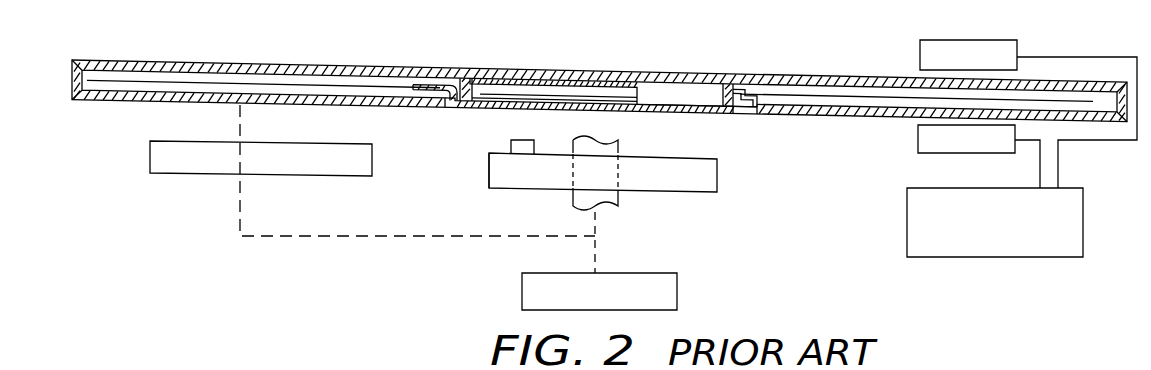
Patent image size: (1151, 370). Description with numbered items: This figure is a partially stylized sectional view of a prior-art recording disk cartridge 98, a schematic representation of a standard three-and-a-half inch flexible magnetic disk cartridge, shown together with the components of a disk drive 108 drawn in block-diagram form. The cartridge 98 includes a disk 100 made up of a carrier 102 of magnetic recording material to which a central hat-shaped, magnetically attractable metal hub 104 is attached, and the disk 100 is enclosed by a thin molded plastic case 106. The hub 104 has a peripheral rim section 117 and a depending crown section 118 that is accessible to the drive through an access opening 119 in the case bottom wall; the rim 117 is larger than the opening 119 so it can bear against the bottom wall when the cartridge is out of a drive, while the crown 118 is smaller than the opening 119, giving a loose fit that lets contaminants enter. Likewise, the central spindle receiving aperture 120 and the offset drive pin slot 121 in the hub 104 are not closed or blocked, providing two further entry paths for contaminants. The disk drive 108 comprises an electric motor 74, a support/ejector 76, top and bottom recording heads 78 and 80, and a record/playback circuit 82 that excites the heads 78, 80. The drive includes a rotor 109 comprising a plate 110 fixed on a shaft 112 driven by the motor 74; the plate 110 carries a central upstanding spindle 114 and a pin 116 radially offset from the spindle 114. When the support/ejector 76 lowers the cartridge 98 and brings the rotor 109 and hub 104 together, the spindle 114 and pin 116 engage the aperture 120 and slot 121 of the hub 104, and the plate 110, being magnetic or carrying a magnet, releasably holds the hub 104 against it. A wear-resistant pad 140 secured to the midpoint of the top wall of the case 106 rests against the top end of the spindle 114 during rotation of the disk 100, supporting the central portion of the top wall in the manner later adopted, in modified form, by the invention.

The electric motor 74 is at (678, 298).
The support/ejector 76 is at (372, 170).
The top recording head 78 is at (920, 57).
The bottom recording head 80 is at (918, 141).
The record/playback circuit 82 is at (908, 220).
The cartridge 98 is at (666, 66).
The disk 100 is at (729, 112).
The carrier 102 is at (842, 96).
The hub 104 is at (718, 116).
The case 106 is at (522, 67).
The disk drive 108 is at (798, 267).
The rotor 109 is at (550, 188).
The plate 110 is at (718, 177).
The shaft 112 is at (619, 196).
The spindle 114 is at (620, 148).
The pin 116 is at (519, 141).
The peripheral rim section 117 is at (737, 88).
The depending crown section 118 is at (493, 96).
The access opening 119 is at (446, 101).
The central spindle receiving aperture 120 is at (598, 104).
The offset drive pin slot 121 is at (518, 104).
The wear-resistant pad 140 is at (650, 106).